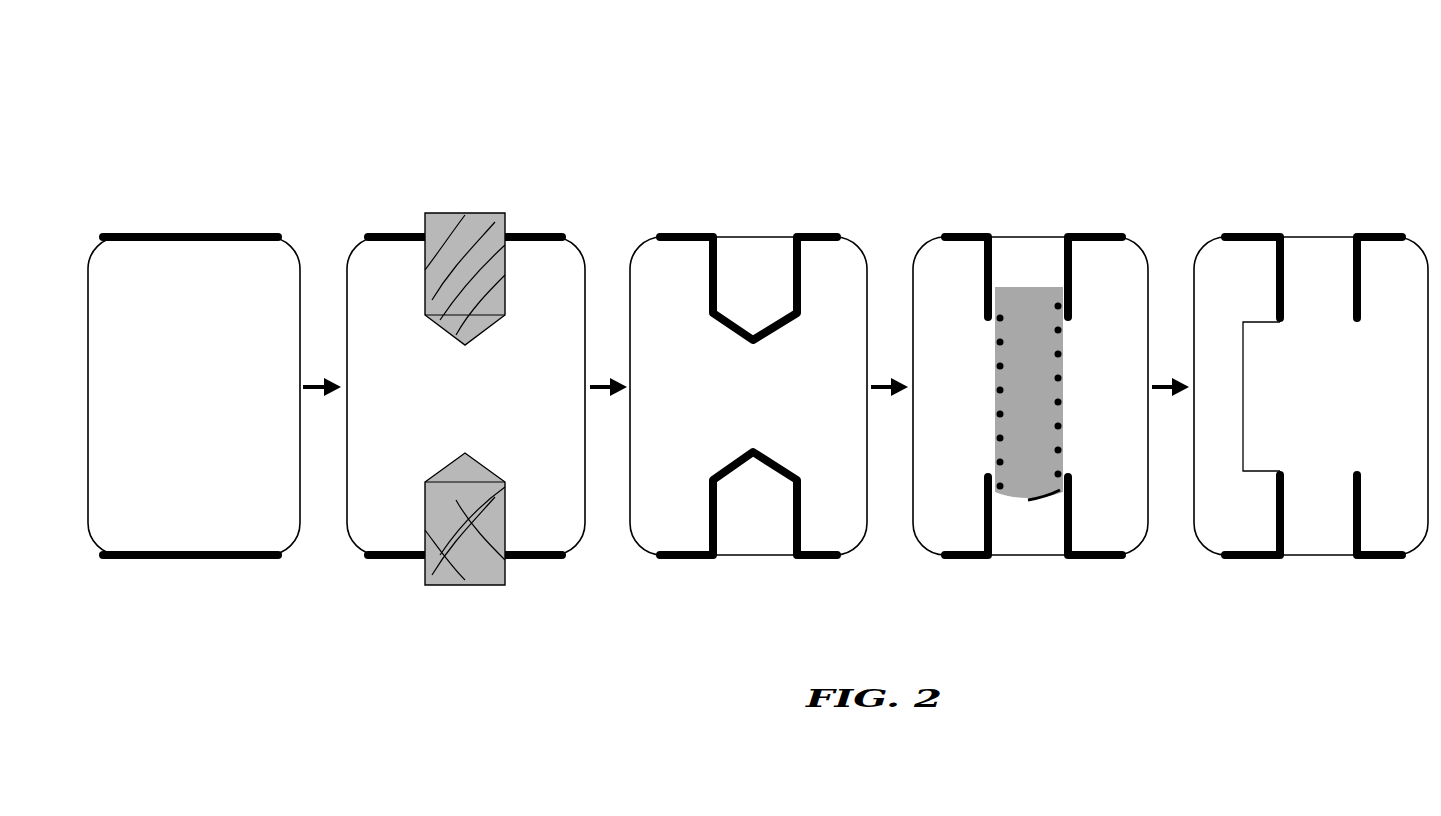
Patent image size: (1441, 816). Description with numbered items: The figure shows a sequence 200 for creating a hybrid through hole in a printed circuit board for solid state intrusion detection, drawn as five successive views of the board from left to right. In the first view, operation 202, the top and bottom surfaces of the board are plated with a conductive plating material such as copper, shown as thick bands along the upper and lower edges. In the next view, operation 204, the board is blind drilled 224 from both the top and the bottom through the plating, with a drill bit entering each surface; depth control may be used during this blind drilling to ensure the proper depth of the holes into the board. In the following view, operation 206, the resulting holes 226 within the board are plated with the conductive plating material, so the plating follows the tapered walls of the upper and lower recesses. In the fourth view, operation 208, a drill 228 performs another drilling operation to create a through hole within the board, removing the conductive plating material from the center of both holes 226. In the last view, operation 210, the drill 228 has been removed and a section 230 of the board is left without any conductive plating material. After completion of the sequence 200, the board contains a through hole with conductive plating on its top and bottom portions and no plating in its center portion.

The sequence 200 is at (1174, 126).
The operation 202 is at (205, 383).
The operation 204 is at (473, 383).
The operation 206 is at (765, 395).
The operation 208 is at (1030, 411).
The operation 210 is at (1292, 411).
The blind drilling 224 is at (447, 236).
The holes 226 is at (750, 262).
The drill 228 is at (1043, 293).
The section 230 is at (1243, 415).